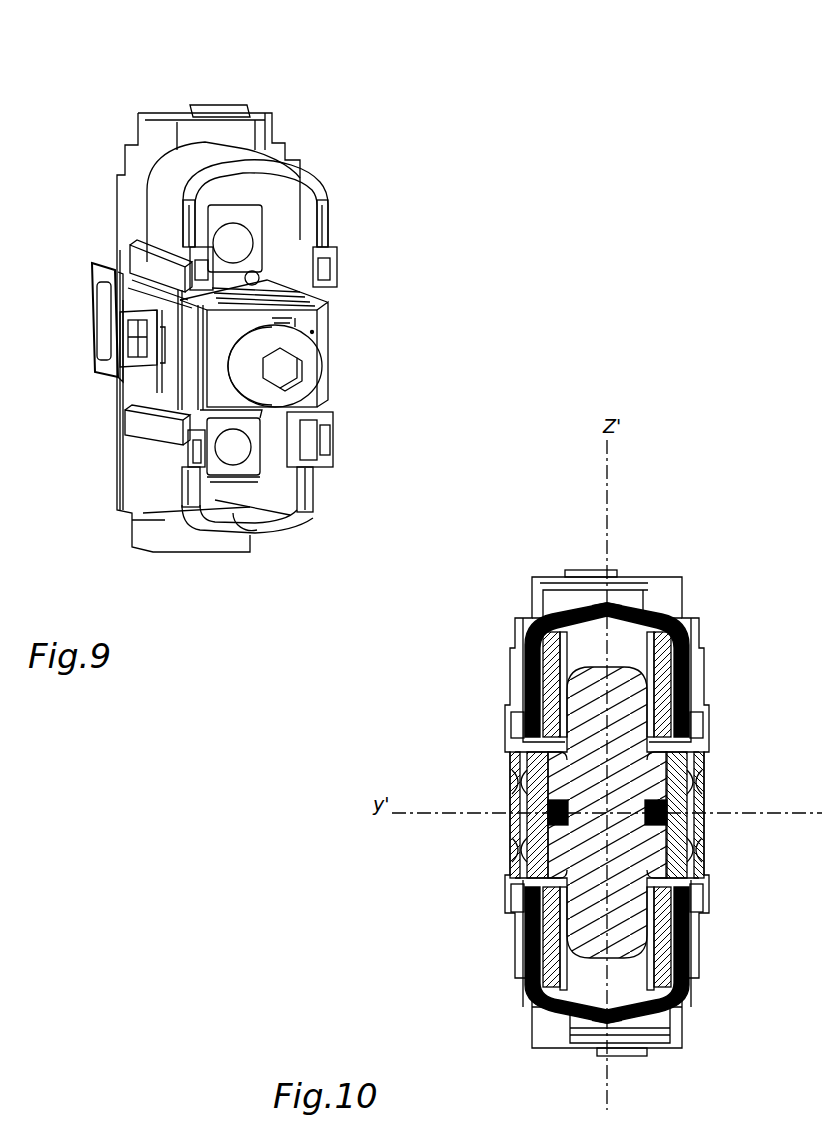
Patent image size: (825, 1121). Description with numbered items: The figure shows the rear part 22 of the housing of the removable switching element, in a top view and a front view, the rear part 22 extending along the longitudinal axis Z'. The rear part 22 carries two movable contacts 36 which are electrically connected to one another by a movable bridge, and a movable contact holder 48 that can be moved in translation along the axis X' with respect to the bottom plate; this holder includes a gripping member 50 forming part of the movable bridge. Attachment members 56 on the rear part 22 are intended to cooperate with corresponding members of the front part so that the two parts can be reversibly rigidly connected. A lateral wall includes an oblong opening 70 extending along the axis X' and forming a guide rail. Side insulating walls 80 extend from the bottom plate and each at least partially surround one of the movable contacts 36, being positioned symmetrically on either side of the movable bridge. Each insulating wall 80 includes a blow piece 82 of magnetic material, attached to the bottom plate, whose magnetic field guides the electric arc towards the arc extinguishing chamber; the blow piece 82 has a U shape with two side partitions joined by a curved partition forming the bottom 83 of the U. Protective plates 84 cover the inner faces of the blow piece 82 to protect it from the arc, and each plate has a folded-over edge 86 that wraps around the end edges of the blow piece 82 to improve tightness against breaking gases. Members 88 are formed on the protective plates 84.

In FIG. 9, the rear part 22 is at (115, 83).
In FIG. 10, the rear part 22 is at (712, 571).
In FIG. 9, the movable contacts 36 is at (232, 235).
In FIG. 9, the movable contact holder 48 is at (313, 320).
In FIG. 9, the gripping member 50 is at (310, 360).
In FIG. 9, the attachment members 56 is at (228, 112).
In FIG. 9, the oblong opening 70 is at (138, 338).
In FIG. 9, the side insulating walls 80 is at (290, 130).
In FIG. 10, the side insulating walls 80 is at (706, 632).
In FIG. 9, the blow piece 82 is at (197, 160).
In FIG. 10, the blow piece 82 is at (652, 612).
In FIG. 10, the bottom of the U shape 83 is at (627, 600).
In FIG. 9, the protective plates 84 is at (203, 220).
In FIG. 10, the protective plates 84 is at (527, 688).
In FIG. 9, the folded-over edge 86 is at (131, 259).
In FIG. 10, the folded-over edge 86 is at (509, 722).
In FIG. 9, the members 88 is at (135, 294).